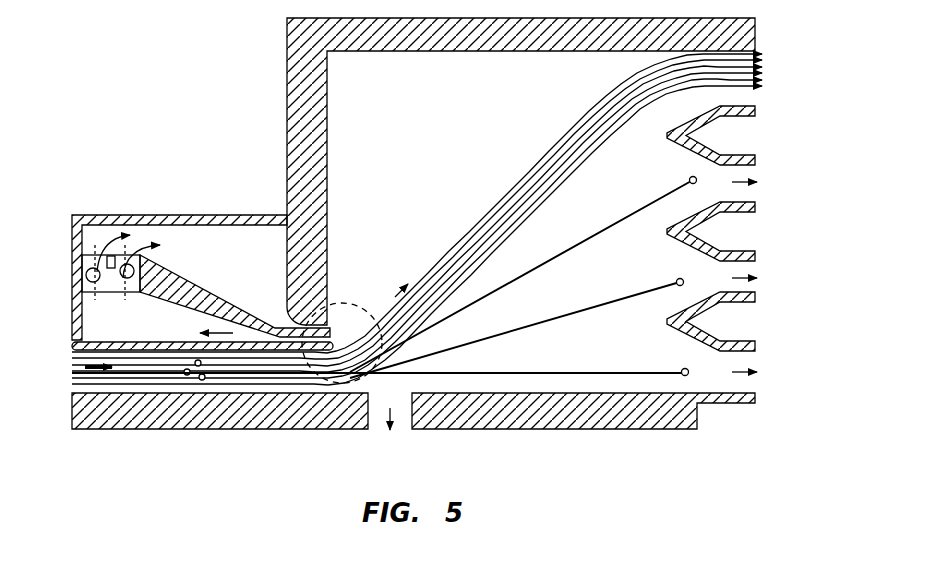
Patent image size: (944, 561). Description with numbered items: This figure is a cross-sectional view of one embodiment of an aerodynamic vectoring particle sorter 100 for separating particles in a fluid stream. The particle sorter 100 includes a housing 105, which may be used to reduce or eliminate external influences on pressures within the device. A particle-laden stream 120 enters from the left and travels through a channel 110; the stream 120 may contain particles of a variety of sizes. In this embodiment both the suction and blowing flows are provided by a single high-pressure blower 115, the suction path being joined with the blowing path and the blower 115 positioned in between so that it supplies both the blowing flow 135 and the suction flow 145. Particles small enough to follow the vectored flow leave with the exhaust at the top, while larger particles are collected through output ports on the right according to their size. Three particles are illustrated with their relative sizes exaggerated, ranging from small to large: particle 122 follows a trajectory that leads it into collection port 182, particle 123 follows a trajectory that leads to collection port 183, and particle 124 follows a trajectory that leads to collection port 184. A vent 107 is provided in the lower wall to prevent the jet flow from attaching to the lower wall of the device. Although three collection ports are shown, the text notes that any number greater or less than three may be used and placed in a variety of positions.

The aerodynamic vectoring particle sorter 100 is at (180, 98).
The housing 105 is at (590, 420).
The vent 107 is at (403, 410).
The channel 110 is at (72, 393).
The high-pressure blower 115 is at (92, 272).
The particle-laden stream 120 is at (68, 367).
The particle 122 is at (696, 178).
The particle 123 is at (683, 280).
The particle 124 is at (688, 370).
The blowing flow 135 is at (292, 320).
The suction flow 145 is at (232, 333).
The collection port 182 is at (765, 177).
The collection port 183 is at (765, 272).
The collection port 184 is at (765, 366).